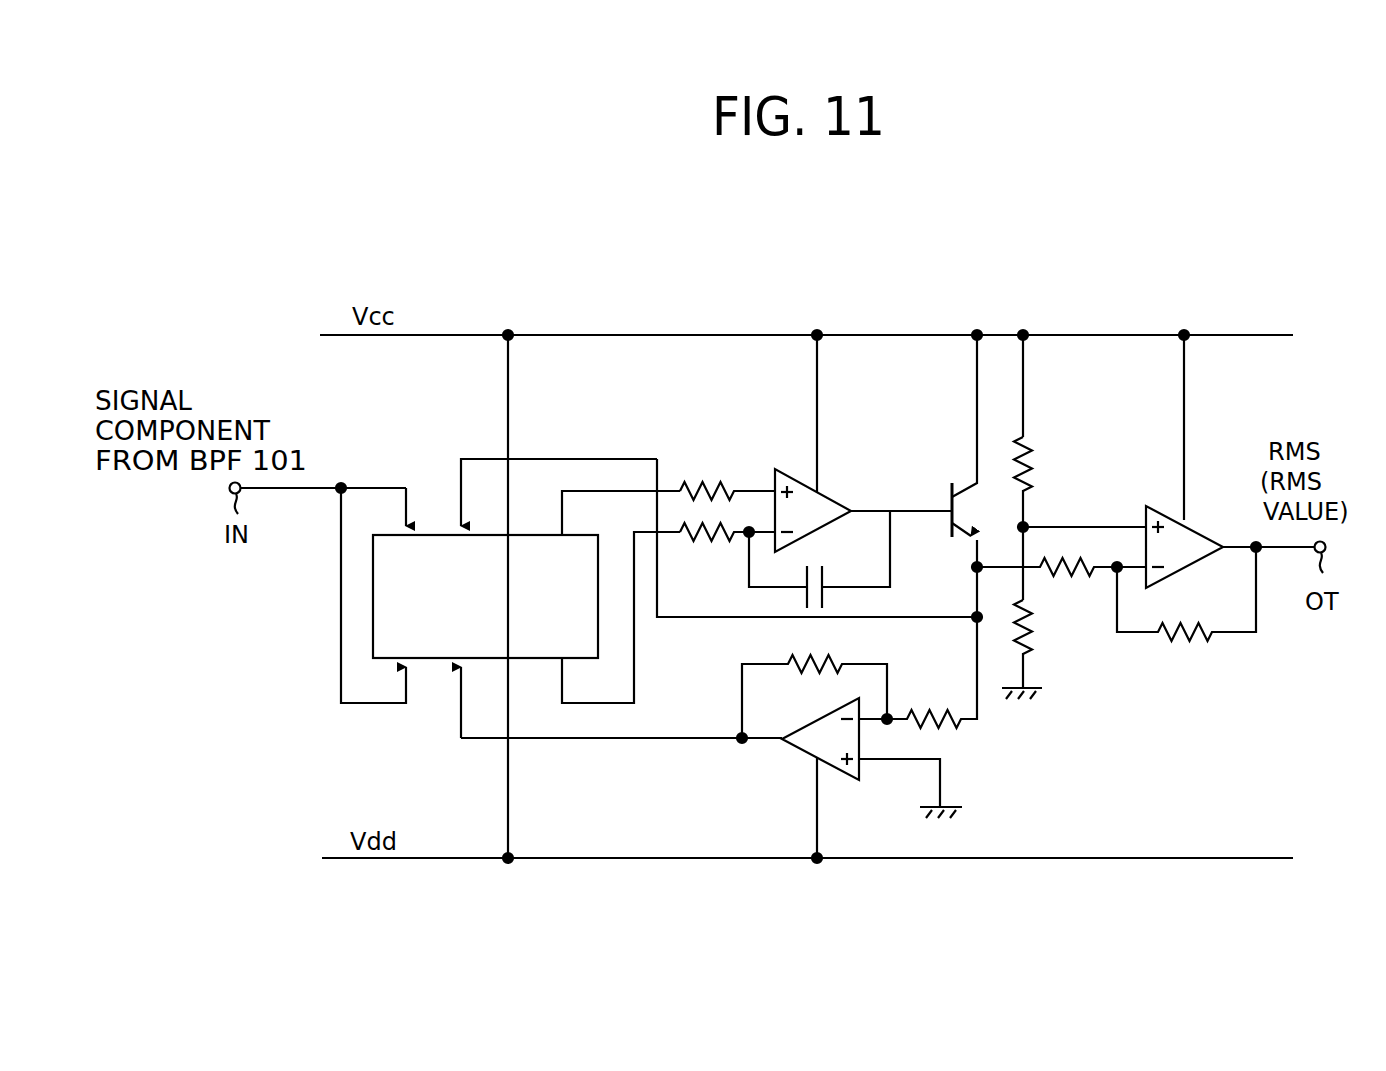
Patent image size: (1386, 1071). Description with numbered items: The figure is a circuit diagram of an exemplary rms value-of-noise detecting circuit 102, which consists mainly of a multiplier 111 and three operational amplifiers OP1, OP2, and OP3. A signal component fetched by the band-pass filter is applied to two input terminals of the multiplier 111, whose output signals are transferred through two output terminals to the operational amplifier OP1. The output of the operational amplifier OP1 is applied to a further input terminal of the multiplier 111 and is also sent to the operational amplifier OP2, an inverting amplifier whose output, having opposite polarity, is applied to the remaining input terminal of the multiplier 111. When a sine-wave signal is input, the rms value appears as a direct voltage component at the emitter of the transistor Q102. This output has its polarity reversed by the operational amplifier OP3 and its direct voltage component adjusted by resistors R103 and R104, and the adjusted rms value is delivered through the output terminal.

The rms value-of-noise detecting circuit 102 is at (1018, 291).
The multiplier 111 is at (438, 659).
The transistor Q102 is at (951, 487).
The resistor R103 is at (1038, 450).
The resistor R104 is at (1038, 640).
The operational amplifier OP1 is at (818, 523).
The operational amplifier OP2 is at (786, 748).
The operational amplifier OP3 is at (1180, 571).